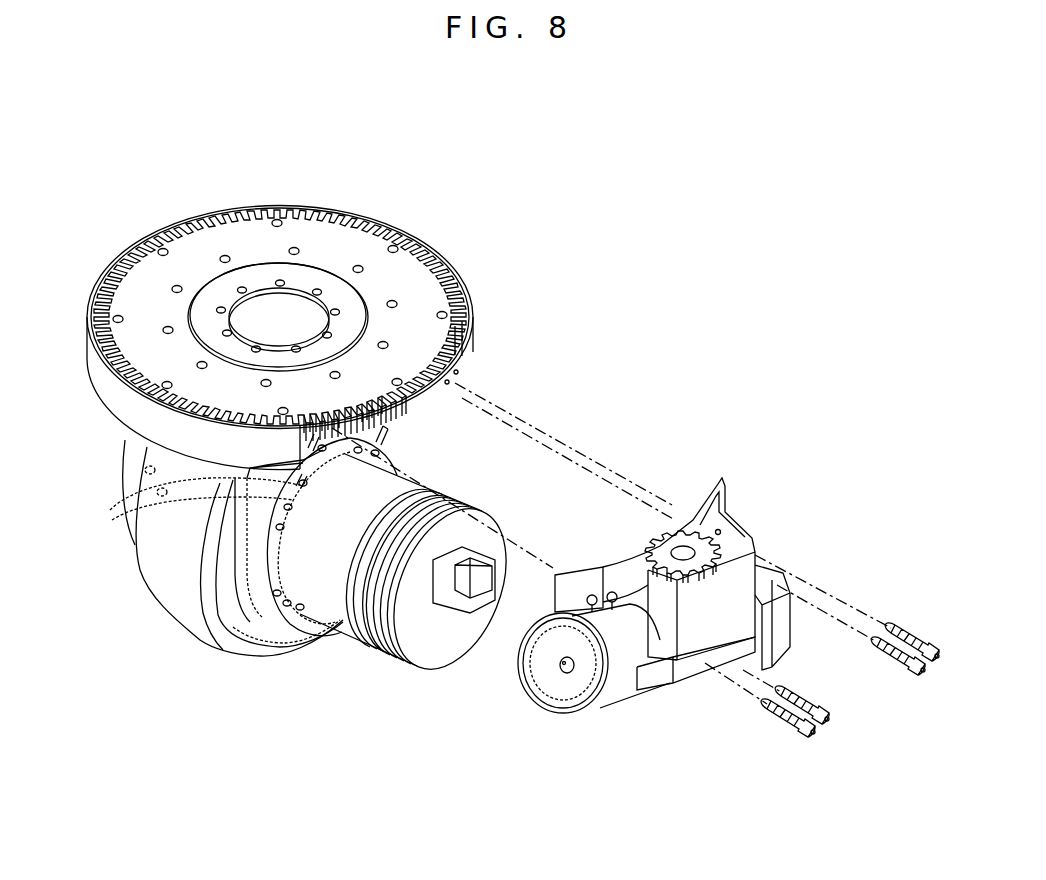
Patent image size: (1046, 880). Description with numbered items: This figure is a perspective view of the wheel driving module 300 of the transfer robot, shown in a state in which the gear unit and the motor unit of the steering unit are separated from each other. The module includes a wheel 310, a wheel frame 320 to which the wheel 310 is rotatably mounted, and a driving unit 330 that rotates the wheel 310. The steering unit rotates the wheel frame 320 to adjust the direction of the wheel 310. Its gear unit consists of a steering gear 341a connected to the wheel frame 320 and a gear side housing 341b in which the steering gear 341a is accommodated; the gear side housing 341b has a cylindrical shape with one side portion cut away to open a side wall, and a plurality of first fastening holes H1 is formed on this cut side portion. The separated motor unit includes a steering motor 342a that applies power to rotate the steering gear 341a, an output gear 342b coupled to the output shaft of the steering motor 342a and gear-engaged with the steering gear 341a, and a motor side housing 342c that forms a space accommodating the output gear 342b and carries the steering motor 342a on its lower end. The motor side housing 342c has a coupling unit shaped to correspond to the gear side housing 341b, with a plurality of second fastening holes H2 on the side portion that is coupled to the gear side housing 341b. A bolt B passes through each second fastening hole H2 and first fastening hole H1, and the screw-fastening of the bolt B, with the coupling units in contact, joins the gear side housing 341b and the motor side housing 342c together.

The wheel driving module 300 is at (630, 163).
The steering gear 341a is at (318, 238).
The gear side housing 341b is at (112, 396).
The first fastening holes H1 is at (456, 373).
The wheel 310 is at (177, 608).
The wheel frame 320 is at (250, 590).
The driving unit 330 is at (340, 607).
The steering motor 342a is at (623, 667).
The output gear 342b is at (675, 540).
The motor side housing 342c is at (733, 583).
The second fastening holes H2 is at (720, 532).
The bolt B is at (936, 658).